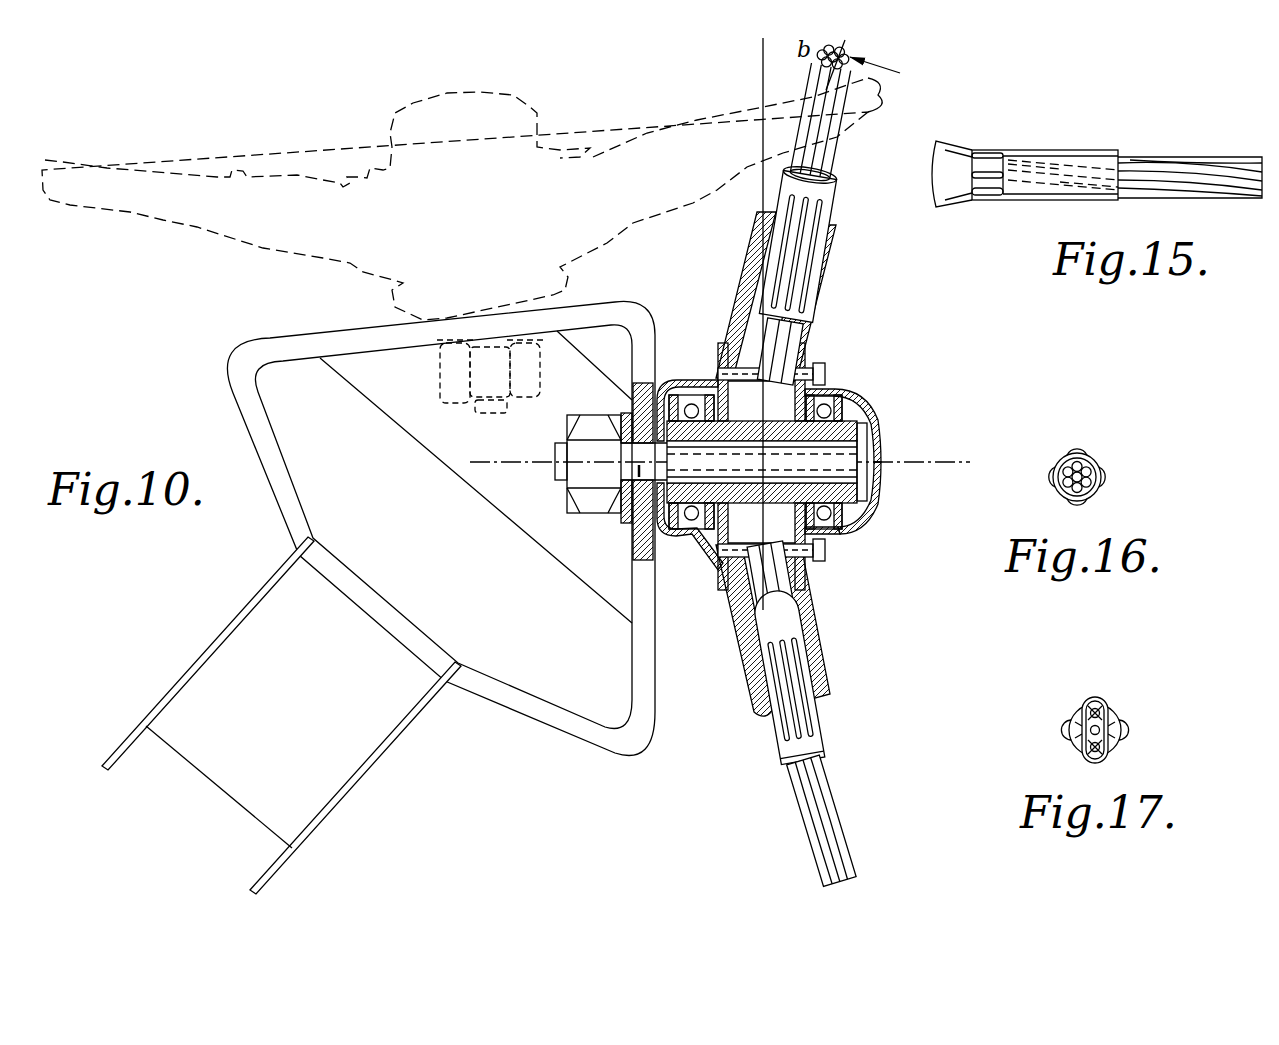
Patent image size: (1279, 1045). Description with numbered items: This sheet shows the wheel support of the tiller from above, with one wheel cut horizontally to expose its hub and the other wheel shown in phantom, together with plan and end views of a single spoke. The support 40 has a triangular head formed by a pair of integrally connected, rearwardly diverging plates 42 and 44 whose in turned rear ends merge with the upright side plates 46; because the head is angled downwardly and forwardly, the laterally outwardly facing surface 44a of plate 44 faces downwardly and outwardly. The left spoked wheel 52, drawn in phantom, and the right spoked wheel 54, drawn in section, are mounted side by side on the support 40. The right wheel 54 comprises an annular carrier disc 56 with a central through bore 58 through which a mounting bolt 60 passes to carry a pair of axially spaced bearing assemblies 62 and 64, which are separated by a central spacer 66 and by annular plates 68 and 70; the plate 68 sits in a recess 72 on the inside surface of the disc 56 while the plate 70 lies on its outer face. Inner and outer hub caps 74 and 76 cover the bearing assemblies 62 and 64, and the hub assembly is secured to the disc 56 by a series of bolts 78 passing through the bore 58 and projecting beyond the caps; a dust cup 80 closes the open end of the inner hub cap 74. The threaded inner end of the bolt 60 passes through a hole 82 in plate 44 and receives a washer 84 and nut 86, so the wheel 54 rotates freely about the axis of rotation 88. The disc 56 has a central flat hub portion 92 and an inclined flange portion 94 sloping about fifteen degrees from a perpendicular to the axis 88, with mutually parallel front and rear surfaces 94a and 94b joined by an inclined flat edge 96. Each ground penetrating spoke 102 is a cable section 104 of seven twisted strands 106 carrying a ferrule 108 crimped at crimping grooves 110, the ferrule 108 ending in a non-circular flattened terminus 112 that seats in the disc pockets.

In FIG. 10, the support 40 is at (404, 591).
In FIG. 10, the plate 42 is at (317, 345).
In FIG. 10, the plate 44 is at (655, 690).
In FIG. 10, the laterally outwardly facing surface 44a is at (650, 625).
In FIG. 10, the upright side plate 46 is at (217, 644).
In FIG. 10, the left spoked wheel 52 is at (763, 43).
In FIG. 10, the right spoked wheel 54 is at (842, 667).
In FIG. 10, the carrier disc 56 is at (808, 474).
In FIG. 10, the central through bore 58 is at (825, 537).
In FIG. 10, the mounting bolt 60 is at (837, 454).
In FIG. 10, the bearing assembly 62 is at (690, 411).
In FIG. 10, the bearing assembly 64 is at (857, 404).
In FIG. 10, the central spacer 66 is at (770, 420).
In FIG. 10, the annular plate 68 is at (718, 340).
In FIG. 10, the annular plate 70 is at (820, 298).
In FIG. 10, the recess 72 is at (728, 582).
In FIG. 10, the inner hub cap 74 is at (690, 380).
In FIG. 10, the outer hub cap 76 is at (860, 521).
In FIG. 10, the bolt 78 is at (825, 373).
In FIG. 10, the dust cup 80 is at (666, 538).
In FIG. 10, the hole 82 is at (625, 472).
In FIG. 10, the washer 84 is at (627, 413).
In FIG. 10, the nut 86 is at (585, 427).
In FIG. 10, the axis of rotation 88 is at (962, 458).
In FIG. 10, the hub portion 92 is at (812, 346).
In FIG. 10, the flange portion 94 is at (796, 277).
In FIG. 10, the front surface 94a is at (805, 322).
In FIG. 10, the rear surface 94b is at (742, 302).
In FIG. 10, the inclined flat edge 96 is at (764, 715).
In FIG. 10, the ground penetrating spoke 102 is at (857, 483).
In FIG. 15, the ground penetrating spoke 102 is at (1086, 173).
In FIG. 16, the ground penetrating spoke 102 is at (1140, 457).
In FIG. 17, the ground penetrating spoke 102 is at (1158, 713).
In FIG. 15, the cable section 104 is at (1190, 157).
In FIG. 10, the strand 106 is at (852, 878).
In FIG. 15, the strand 106 is at (1228, 183).
In FIG. 16, the strand 106 is at (1090, 481).
In FIG. 10, the ferrule 108 is at (827, 752).
In FIG. 15, the ferrule 108 is at (993, 150).
In FIG. 16, the ferrule 108 is at (1098, 468).
In FIG. 17, the ferrule 108 is at (1121, 744).
In FIG. 15, the crimping groove 110 is at (982, 178).
In FIG. 15, the flattened terminus 112 is at (942, 172).
In FIG. 16, the flattened terminus 112 is at (1069, 447).
In FIG. 17, the flattened terminus 112 is at (1093, 697).